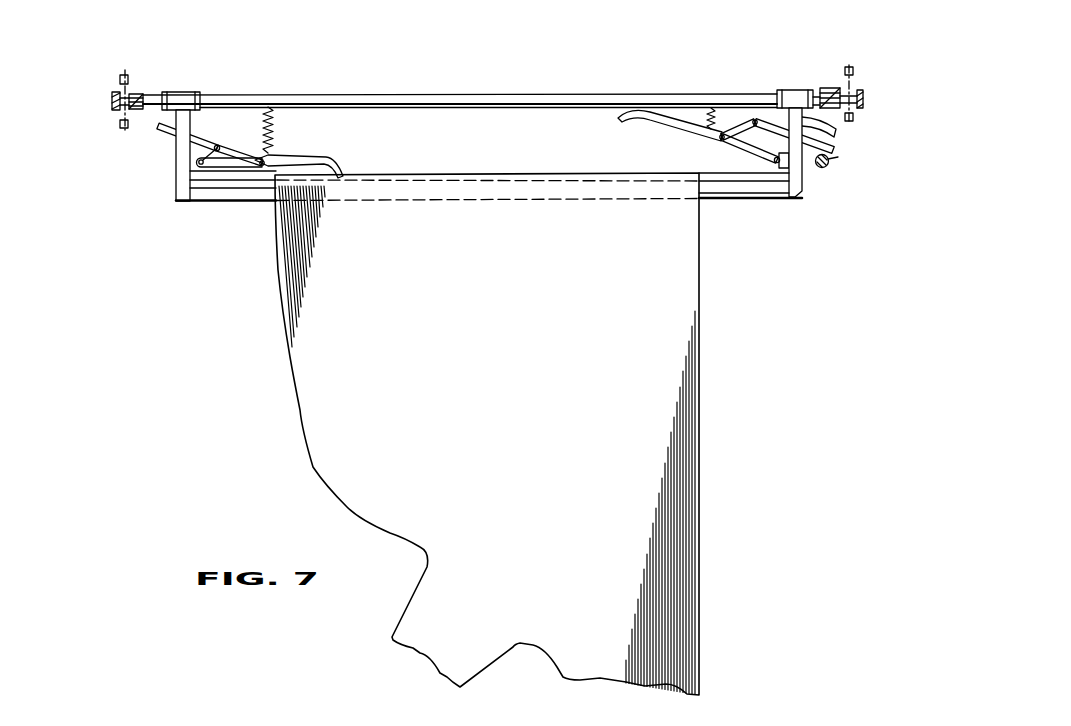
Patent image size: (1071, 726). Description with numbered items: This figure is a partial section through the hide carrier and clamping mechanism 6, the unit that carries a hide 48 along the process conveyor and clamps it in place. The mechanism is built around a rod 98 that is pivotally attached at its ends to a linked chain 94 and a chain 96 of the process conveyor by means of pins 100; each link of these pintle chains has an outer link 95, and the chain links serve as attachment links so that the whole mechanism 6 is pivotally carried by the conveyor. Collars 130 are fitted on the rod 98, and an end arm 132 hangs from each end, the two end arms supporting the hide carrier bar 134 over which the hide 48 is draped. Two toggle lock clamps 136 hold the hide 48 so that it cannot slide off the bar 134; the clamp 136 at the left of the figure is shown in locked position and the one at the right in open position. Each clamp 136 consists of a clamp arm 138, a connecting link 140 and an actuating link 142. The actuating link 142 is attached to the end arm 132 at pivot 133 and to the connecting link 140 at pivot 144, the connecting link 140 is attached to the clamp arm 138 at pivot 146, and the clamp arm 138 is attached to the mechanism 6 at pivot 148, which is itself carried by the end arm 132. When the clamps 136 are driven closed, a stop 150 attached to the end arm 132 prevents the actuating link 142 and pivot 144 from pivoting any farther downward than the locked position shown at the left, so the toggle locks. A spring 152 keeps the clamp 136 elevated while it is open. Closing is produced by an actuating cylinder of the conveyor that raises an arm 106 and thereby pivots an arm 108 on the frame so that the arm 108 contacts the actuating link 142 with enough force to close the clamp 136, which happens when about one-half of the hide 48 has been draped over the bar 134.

The hide carrier and clamping mechanism 6 is at (481, 86).
The hide 48 is at (688, 380).
The pintle chain 94 is at (852, 66).
The outer link 95 is at (113, 108).
The pintle chain 96 is at (119, 80).
The rod 98 is at (527, 95).
The pin 100 is at (148, 92).
The arm 106 is at (826, 167).
The arm 108 is at (829, 158).
The collar 130 is at (171, 91).
The end arm 132 is at (177, 184).
The pivot 133 is at (179, 172).
The hide carrier bar 134 is at (252, 191).
The toggle lock clamp 136 is at (235, 178).
The clamp arm 138 is at (329, 157).
The connecting link 140 is at (235, 153).
The actuating link 142 is at (162, 131).
The pivot 144 is at (236, 148).
The pivot 146 is at (261, 168).
The pivot 148 is at (187, 183).
The stop 150 is at (214, 149).
The spring 152 is at (272, 118).